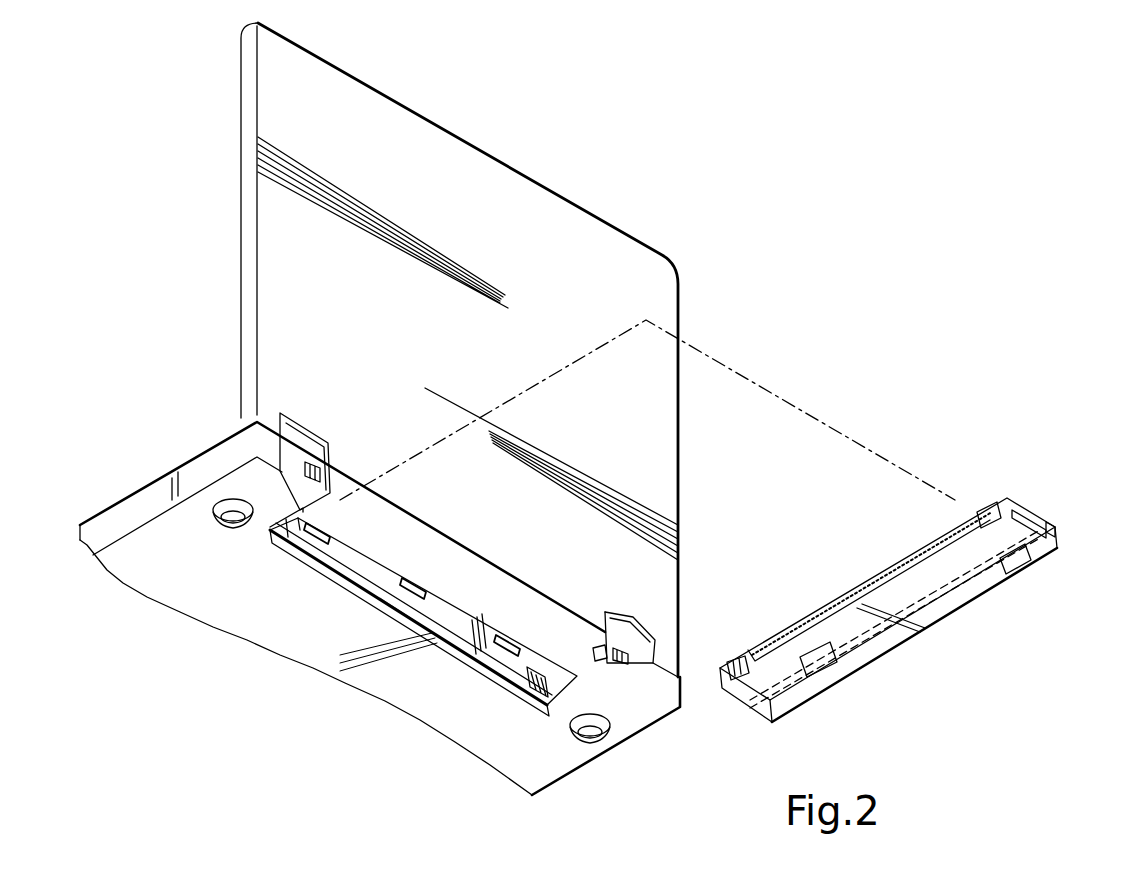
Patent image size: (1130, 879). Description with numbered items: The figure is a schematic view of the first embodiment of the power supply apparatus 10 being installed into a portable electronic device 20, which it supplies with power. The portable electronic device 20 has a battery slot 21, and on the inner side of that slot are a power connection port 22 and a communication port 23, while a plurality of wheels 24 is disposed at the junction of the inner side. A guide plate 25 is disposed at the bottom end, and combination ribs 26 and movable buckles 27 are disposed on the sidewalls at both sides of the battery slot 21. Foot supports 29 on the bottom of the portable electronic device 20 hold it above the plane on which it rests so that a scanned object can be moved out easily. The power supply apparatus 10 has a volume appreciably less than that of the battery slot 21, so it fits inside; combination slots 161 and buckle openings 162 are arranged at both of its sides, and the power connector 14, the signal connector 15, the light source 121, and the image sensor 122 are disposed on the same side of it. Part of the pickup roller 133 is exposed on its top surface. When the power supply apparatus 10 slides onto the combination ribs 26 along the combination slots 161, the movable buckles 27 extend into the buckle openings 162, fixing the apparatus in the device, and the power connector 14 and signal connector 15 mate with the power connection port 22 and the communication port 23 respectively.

The power supply apparatus 10 is at (1010, 497).
The power connector 14 is at (730, 661).
The signal connector 15 is at (987, 510).
The portable electronic device 20 is at (150, 478).
The battery slot 21 is at (461, 579).
The power connection port 22 is at (540, 709).
The communication port 23 is at (300, 540).
The wheels 24 is at (403, 575).
The guide plate 25 is at (432, 633).
The combination ribs 26 is at (570, 658).
The movable buckles 27 is at (586, 650).
The foot supports 29 is at (233, 523).
The light source 121 is at (840, 598).
The image sensor 122 is at (892, 572).
The pickup roller 133 is at (1020, 576).
The combination slots 161 is at (1028, 520).
The buckle openings 162 is at (1058, 520).